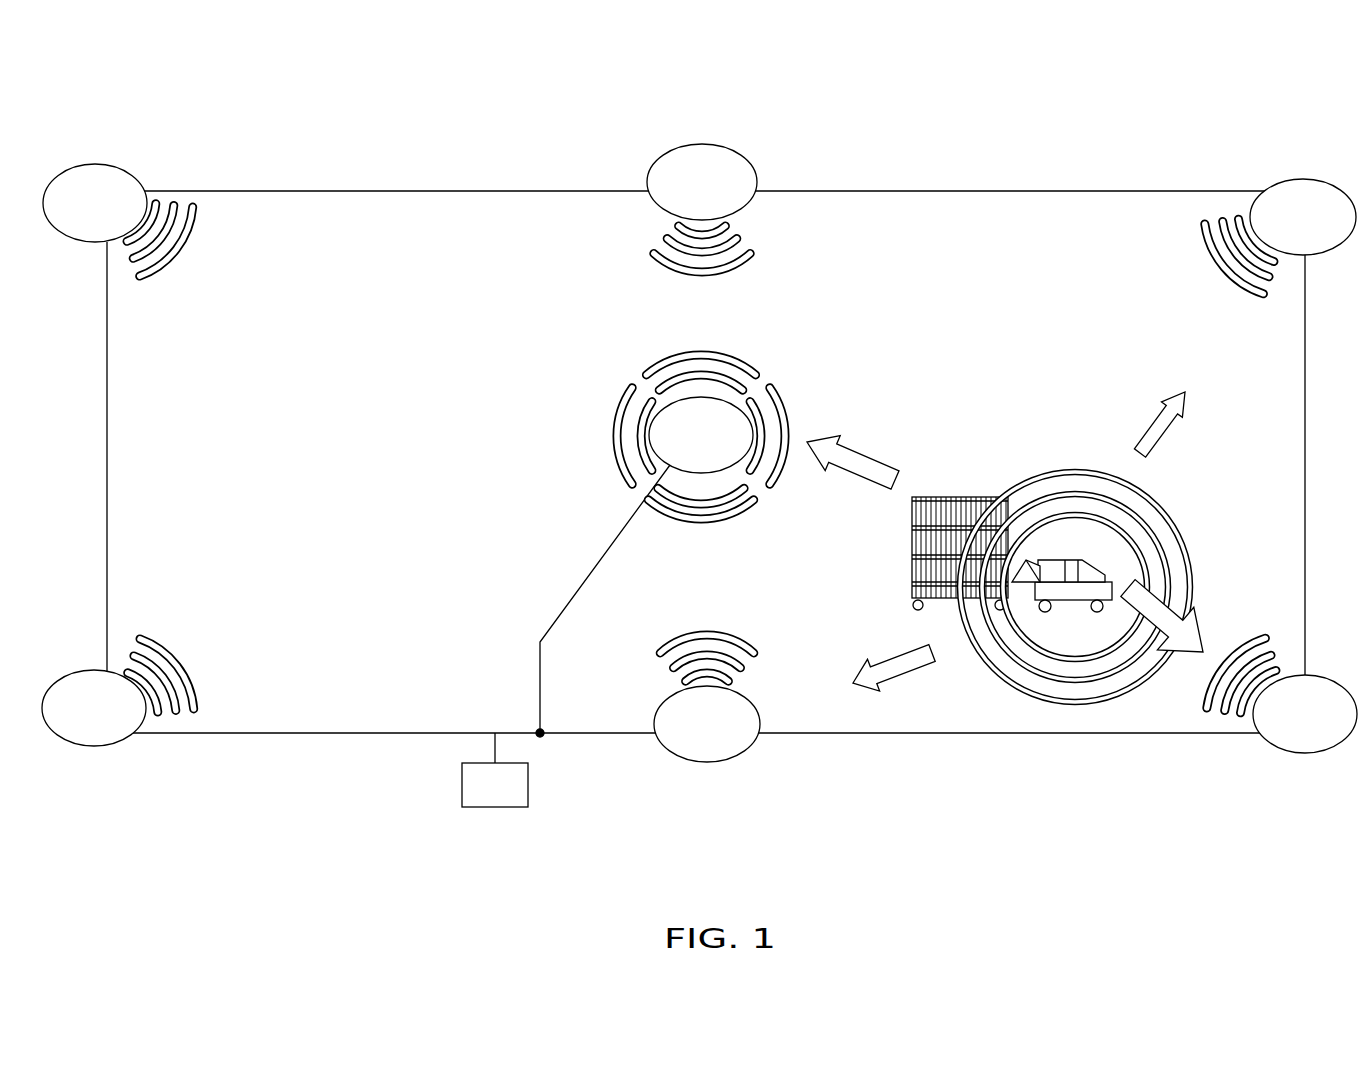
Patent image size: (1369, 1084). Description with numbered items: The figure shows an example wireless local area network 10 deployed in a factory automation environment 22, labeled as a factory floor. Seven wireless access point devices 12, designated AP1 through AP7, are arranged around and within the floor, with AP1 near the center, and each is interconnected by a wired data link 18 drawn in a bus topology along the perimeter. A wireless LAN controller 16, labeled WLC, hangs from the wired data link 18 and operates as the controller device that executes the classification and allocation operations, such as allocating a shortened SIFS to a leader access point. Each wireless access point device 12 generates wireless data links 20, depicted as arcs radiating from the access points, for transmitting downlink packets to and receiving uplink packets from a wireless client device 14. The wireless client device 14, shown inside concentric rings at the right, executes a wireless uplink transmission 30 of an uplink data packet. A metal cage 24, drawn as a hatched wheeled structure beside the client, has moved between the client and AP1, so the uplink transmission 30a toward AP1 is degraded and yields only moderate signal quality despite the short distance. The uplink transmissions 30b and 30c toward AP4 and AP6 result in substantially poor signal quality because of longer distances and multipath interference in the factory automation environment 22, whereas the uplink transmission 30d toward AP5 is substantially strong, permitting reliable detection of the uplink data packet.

The wireless local area network 10 is at (1095, 128).
The wireless access point device 12 is at (95, 165).
The wireless client device 14 is at (1092, 568).
The wireless LAN controller 16 is at (495, 807).
The wired data link 18 is at (583, 585).
The wireless data link 20 is at (172, 270).
The factory automation environment 22 is at (330, 191).
The metal cage 24 is at (958, 498).
The wireless uplink transmission 30 is at (1133, 488).
The degraded uplink transmission 30a is at (858, 478).
The uplink transmission 30b is at (1152, 423).
The uplink transmission 30c is at (893, 653).
The uplink transmission 30d is at (1188, 665).